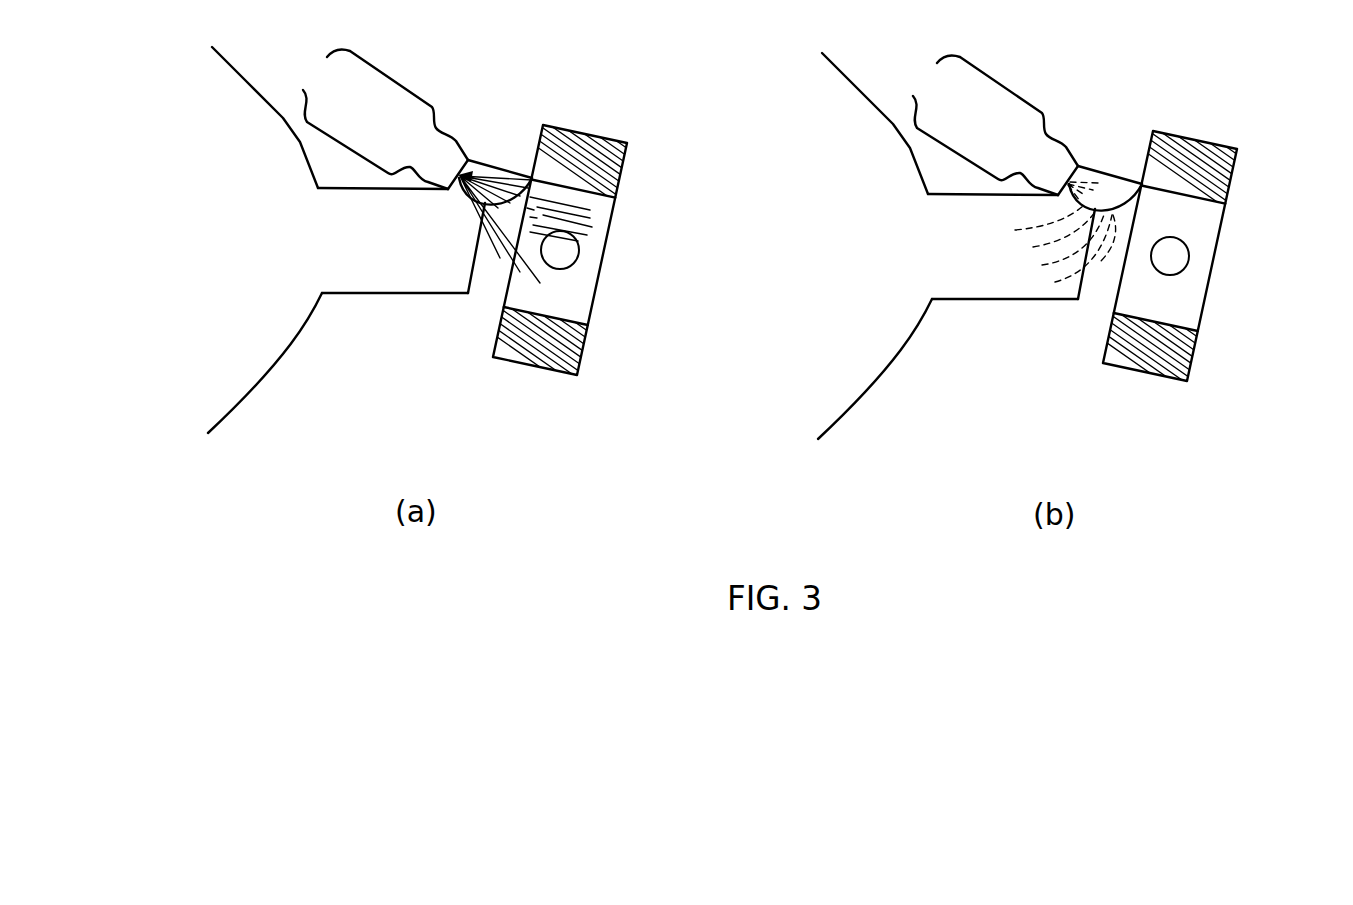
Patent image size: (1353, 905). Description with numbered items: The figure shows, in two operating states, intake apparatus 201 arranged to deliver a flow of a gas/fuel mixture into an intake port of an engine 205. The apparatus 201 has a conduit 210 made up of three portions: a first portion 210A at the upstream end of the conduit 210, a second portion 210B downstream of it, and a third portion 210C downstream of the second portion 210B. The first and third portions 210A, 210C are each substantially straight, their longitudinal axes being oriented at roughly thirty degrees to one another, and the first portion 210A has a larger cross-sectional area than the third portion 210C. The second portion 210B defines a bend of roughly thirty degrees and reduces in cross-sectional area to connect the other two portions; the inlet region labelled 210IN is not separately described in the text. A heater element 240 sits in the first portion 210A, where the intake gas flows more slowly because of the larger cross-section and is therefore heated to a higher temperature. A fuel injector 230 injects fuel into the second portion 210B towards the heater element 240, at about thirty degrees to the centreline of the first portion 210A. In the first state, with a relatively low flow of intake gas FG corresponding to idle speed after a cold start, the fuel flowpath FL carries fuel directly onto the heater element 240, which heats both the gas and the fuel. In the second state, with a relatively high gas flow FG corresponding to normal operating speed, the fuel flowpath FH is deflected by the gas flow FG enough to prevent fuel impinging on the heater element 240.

The intake apparatus 201 is at (362, 386).
The engine 205 is at (264, 174).
The conduit 210 is at (304, 273).
The first portion 210A is at (580, 355).
The second portion 210B is at (488, 300).
The third portion 210C is at (333, 295).
The inlet 210IN is at (607, 240).
The fuel injector 230 is at (382, 118).
The heater element 240 is at (560, 269).
The flowstream of gas FG is at (598, 259).
The flowpath of fuel at low gas flow rate FL is at (483, 183).
The flowpath of fuel at high gas flow rate FH is at (1090, 186).